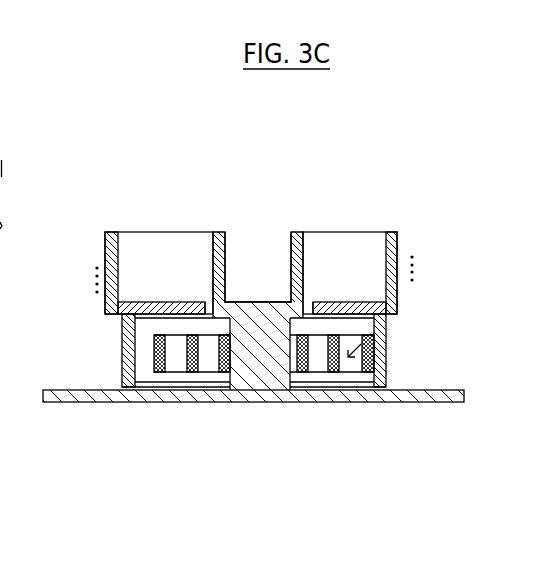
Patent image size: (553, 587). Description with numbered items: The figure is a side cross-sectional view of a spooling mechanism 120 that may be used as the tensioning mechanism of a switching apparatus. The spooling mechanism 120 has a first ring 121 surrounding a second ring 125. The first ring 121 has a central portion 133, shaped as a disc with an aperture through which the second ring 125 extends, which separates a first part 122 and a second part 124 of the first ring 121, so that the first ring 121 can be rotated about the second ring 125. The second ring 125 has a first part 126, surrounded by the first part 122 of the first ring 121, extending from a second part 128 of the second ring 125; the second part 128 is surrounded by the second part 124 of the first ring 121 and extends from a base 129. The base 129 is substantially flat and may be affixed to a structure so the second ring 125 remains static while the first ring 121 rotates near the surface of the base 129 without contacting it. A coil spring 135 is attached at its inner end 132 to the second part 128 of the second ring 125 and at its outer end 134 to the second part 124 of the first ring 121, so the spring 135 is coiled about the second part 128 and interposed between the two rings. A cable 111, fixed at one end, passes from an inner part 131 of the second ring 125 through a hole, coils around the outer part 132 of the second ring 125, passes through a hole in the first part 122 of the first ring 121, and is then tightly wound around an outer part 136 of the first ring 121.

The spooling mechanism 120 is at (366, 121).
The first ring 121 is at (96, 262).
The first part of the first ring 122 is at (105, 308).
The second part of the first ring 124 is at (122, 363).
The second ring 125 is at (226, 221).
The first part of the second ring 126 is at (305, 253).
The second part of the second ring 128 is at (256, 374).
The base 129 is at (428, 403).
The inner part of the second ring 131 is at (226, 243).
The inner end of the spring 132 is at (305, 286).
The central portion 133 is at (145, 301).
The outer end of the spring 134 is at (358, 372).
The coil spring 135 is at (386, 342).
The outer part of the first ring 136 is at (397, 302).
The cable 111 is at (415, 268).